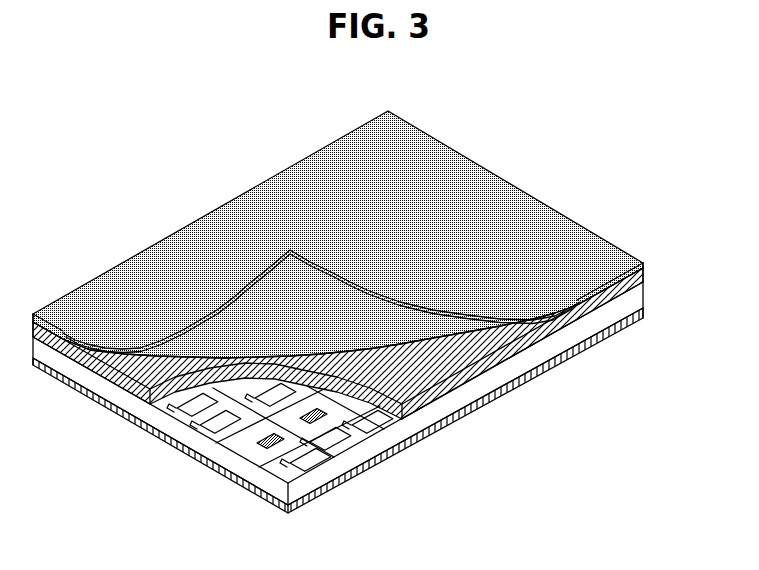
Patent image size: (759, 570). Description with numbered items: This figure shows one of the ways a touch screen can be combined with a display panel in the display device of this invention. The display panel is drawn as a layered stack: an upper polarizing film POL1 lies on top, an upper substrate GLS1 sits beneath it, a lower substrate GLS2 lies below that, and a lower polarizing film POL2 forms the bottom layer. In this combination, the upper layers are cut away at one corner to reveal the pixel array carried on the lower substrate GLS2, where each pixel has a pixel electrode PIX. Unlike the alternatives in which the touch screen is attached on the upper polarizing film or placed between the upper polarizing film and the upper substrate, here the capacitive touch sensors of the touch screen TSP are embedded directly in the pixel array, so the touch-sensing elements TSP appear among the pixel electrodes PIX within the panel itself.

The upper polarizing film POL1 is at (643, 263).
The upper substrate GLS1 is at (643, 278).
The lower substrate GLS2 is at (635, 298).
The lower polarizing film POL2 is at (643, 318).
The touch screen TSP is at (262, 449).
The pixel electrode PIX is at (290, 478).